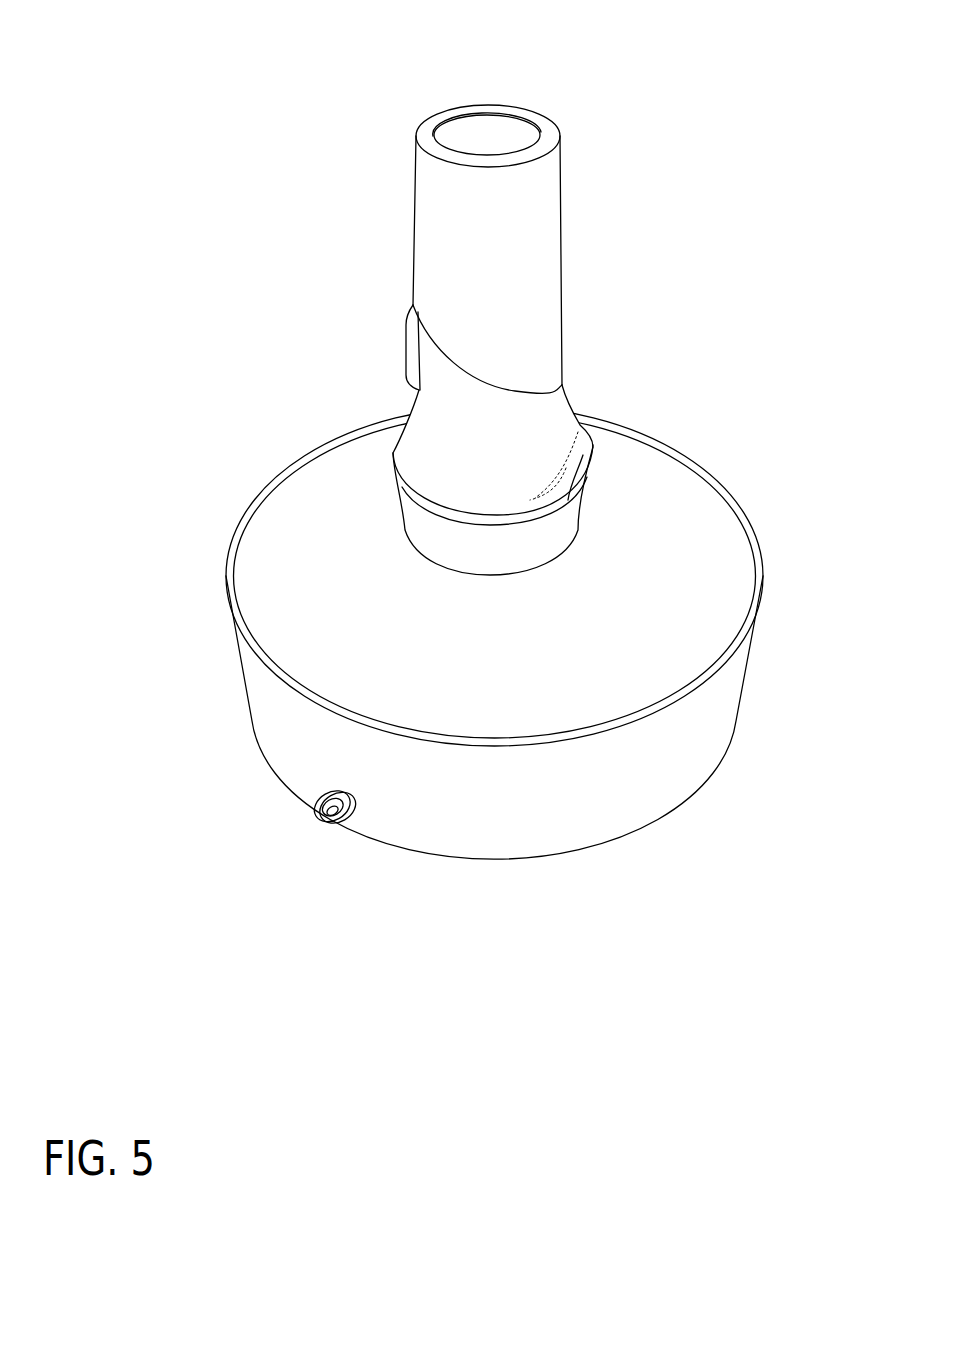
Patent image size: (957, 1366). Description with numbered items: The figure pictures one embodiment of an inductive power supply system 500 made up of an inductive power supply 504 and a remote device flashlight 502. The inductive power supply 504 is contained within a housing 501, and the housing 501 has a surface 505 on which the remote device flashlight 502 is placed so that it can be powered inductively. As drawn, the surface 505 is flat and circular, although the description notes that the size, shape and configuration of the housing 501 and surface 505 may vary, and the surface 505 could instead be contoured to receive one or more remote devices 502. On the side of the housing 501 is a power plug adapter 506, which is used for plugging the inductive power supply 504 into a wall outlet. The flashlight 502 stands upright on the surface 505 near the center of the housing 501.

The inductive power supply system 500 is at (548, 481).
The housing 501 is at (705, 747).
The remote device flashlight 502 is at (510, 143).
The inductive power supply 504 is at (748, 532).
The surface 505 is at (723, 612).
The power plug adapter 506 is at (345, 828).